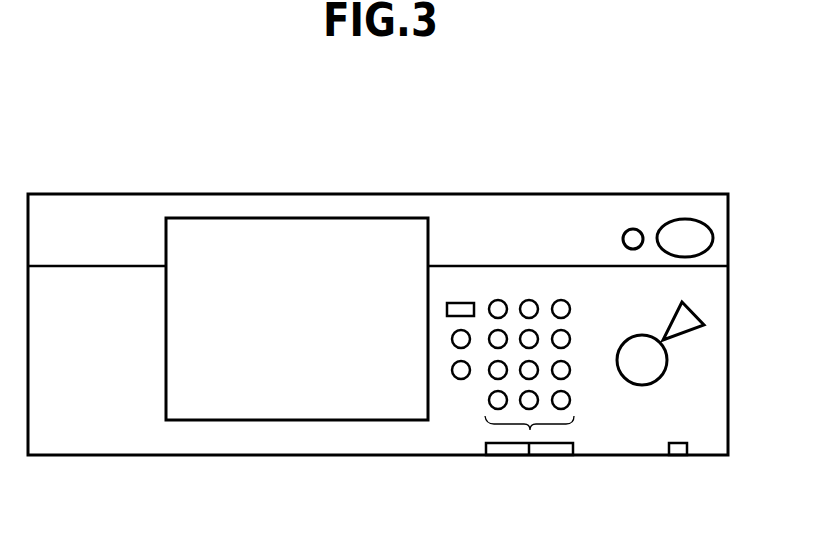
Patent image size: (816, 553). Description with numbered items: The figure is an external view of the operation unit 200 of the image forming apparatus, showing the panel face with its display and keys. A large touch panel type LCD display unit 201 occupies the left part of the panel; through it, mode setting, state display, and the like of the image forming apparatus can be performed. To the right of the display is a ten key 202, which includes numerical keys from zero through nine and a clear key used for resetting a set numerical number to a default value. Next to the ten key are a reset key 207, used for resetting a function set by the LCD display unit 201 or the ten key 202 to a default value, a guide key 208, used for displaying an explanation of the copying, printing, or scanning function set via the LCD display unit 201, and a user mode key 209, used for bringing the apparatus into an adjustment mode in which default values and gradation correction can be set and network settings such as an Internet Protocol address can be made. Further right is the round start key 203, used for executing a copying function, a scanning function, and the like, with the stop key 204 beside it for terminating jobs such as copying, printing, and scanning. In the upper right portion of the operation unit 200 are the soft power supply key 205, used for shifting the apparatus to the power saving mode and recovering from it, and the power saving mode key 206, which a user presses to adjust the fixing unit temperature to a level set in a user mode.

The operation unit 200 is at (128, 193).
The LCD display unit 201 is at (277, 218).
The ten key 202 is at (530, 430).
The start key 203 is at (640, 385).
The stop key 204 is at (698, 308).
The soft power supply key 205 is at (694, 219).
The power saving mode key 206 is at (635, 229).
The reset key 207 is at (465, 303).
The guide key 208 is at (452, 339).
The user mode key 209 is at (461, 379).